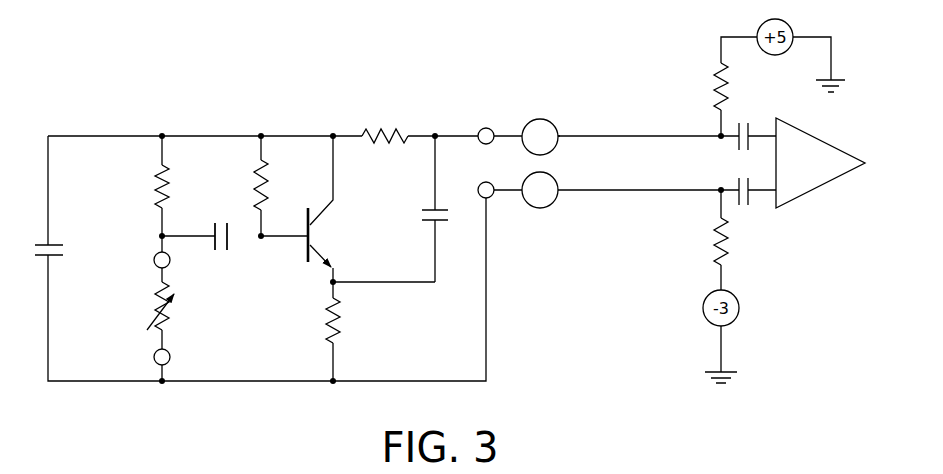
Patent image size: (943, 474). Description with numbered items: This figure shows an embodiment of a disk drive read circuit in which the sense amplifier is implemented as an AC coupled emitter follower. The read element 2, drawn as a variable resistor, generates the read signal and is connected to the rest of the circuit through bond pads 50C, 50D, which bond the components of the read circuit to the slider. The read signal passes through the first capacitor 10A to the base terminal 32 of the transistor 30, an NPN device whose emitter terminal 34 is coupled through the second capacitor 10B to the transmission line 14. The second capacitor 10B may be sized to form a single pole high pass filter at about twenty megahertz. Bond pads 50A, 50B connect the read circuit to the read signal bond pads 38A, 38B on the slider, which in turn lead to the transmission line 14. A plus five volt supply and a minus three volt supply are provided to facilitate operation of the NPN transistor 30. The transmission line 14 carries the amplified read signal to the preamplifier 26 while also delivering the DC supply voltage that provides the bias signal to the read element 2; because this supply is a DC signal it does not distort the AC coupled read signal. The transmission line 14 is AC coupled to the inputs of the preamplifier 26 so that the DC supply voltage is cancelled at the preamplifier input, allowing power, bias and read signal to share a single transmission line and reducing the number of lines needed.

The read element 2 is at (145, 305).
The first capacitor 10A is at (224, 256).
The second capacitor 10B is at (417, 223).
The transmission line 14 is at (625, 134).
The preamplifier 26 is at (820, 187).
The transistor 30 is at (322, 225).
The base terminal 32 is at (294, 240).
The emitter terminal 34 is at (364, 283).
The bond pad 38A is at (541, 119).
The bond pad 38B is at (553, 203).
The bond pad 50A is at (486, 128).
The bond pad 50B is at (491, 197).
The bond pad 50C is at (154, 260).
The bond pad 50D is at (154, 357).